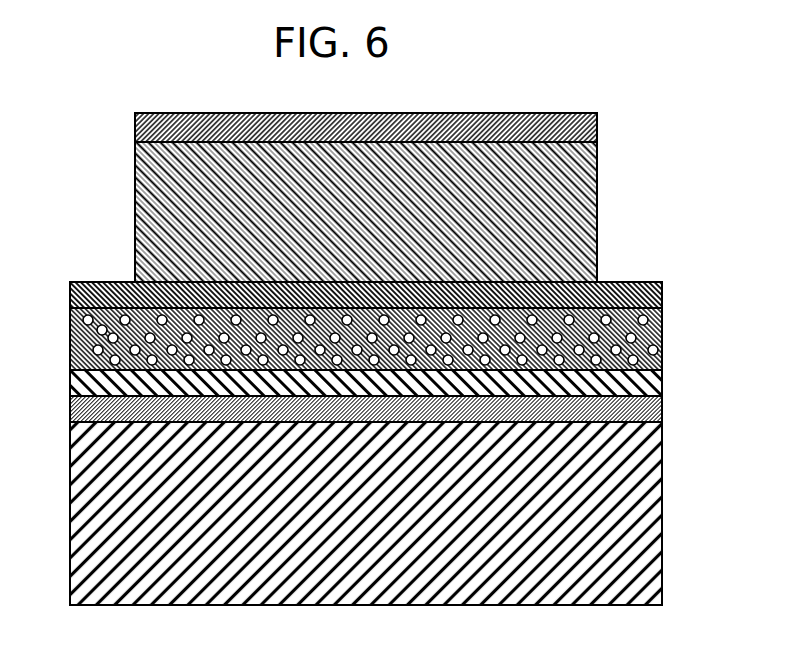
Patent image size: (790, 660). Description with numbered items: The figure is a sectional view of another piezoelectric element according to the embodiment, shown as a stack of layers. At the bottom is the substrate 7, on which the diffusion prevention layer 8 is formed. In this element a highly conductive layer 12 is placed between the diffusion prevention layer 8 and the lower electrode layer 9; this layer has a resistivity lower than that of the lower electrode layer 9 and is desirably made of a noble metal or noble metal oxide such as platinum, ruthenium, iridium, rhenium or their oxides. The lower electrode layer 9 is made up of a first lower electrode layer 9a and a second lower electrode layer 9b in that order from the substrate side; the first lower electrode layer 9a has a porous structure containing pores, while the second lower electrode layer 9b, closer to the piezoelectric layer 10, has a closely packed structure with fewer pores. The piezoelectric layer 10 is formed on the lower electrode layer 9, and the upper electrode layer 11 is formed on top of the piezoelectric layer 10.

The substrate 7 is at (613, 557).
The diffusion prevention layer 8 is at (650, 417).
The highly conductive layer 12 is at (662, 387).
The lower electrode layer 9 is at (369, 327).
The first lower electrode layer 9a is at (62, 309).
The second lower electrode layer 9b is at (62, 283).
The piezoelectric layer 10 is at (575, 235).
The upper electrode layer 11 is at (597, 125).